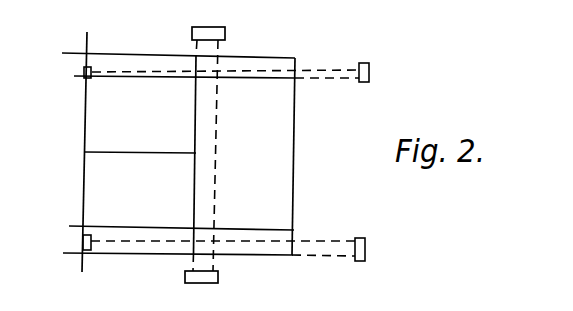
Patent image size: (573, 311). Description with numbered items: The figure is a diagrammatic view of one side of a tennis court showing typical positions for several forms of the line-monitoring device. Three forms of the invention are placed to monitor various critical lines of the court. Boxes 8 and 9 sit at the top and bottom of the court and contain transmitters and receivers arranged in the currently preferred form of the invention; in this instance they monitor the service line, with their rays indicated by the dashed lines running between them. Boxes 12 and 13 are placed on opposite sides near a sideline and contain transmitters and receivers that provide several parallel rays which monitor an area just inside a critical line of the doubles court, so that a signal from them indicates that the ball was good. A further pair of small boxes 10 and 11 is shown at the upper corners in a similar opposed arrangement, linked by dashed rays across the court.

The box 8 is at (185, 278).
The box 9 is at (192, 31).
The upper left sensor 10 is at (84, 72).
The upper right sensor 11 is at (369, 67).
The box 12 is at (83, 243).
The box 13 is at (365, 250).